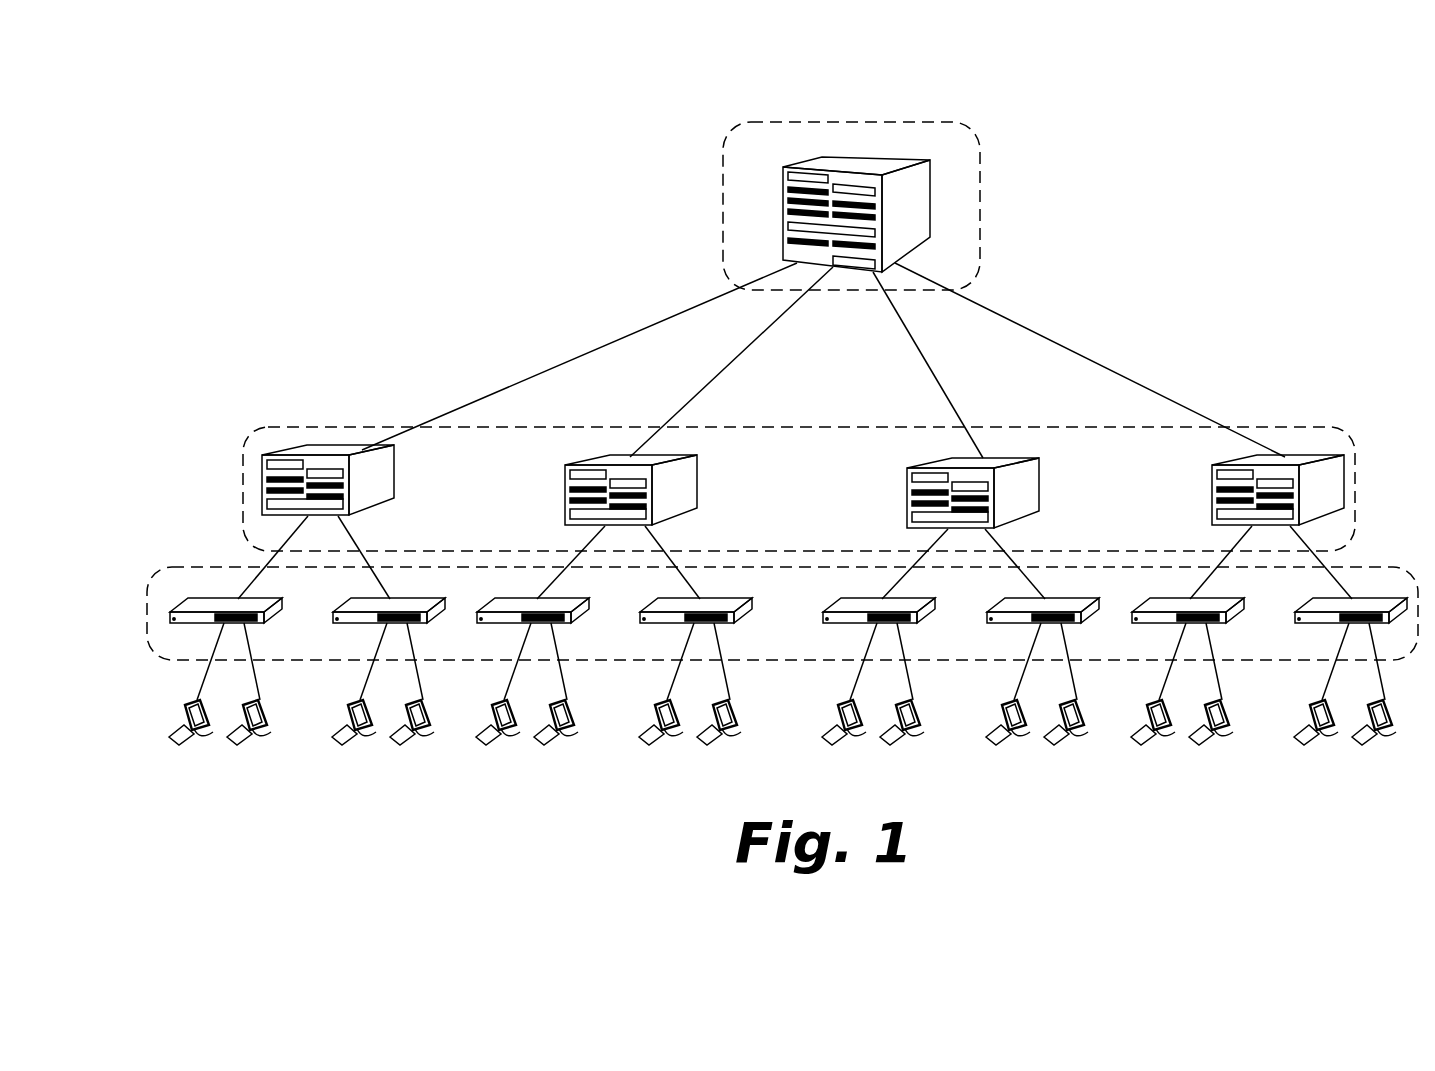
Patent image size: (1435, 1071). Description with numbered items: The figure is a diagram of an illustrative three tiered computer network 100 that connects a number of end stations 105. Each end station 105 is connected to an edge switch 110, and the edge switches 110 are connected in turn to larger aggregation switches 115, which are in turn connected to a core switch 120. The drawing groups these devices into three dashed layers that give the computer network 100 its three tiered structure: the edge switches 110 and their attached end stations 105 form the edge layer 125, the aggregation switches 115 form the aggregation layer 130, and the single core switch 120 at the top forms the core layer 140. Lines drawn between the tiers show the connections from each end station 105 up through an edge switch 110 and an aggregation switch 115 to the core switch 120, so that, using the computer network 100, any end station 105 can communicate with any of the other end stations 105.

The computer network 100 is at (220, 114).
The end station 105 is at (207, 738).
The edge switch 110 is at (183, 603).
The aggregation switch 115 is at (310, 447).
The core switch 120 is at (858, 159).
The edge layer 125 is at (152, 647).
The aggregation layer 130 is at (243, 452).
The core layer 140 is at (722, 200).